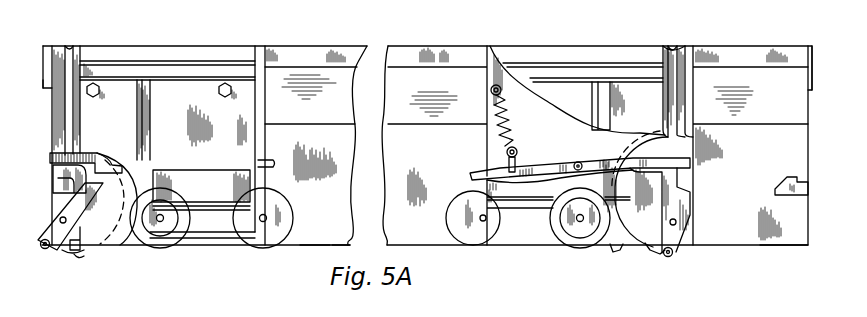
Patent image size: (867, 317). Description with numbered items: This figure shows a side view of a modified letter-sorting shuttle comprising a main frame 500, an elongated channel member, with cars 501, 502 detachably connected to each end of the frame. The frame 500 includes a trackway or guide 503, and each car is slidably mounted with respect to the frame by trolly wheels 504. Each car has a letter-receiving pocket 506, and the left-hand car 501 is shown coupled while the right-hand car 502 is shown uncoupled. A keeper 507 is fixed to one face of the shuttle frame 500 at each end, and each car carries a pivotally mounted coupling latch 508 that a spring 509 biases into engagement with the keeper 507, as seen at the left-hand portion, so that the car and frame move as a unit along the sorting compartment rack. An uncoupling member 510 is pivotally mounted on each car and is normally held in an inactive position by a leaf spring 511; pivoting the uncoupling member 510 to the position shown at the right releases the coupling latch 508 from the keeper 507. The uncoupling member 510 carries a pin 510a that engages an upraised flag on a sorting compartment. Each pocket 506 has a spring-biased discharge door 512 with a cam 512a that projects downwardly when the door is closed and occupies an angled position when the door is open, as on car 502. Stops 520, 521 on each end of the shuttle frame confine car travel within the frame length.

The main frame 500 is at (775, 247).
The car 501 is at (62, 33).
The car 502 is at (537, 243).
The trackway or guide 503 is at (276, 302).
The trolly wheel 504 is at (312, 306).
The letter-receiving pocket 506 is at (78, 46).
The keeper 507 is at (48, 188).
The coupling latch 508 is at (130, 126).
The spring 509 is at (497, 128).
The uncoupling member 510 is at (43, 230).
The pin 510a is at (45, 250).
The leaf spring 511 is at (110, 242).
The discharge door 512 is at (78, 265).
The cam 512a is at (80, 258).
The stop 520 is at (806, 45).
The stop 521 is at (40, 84).